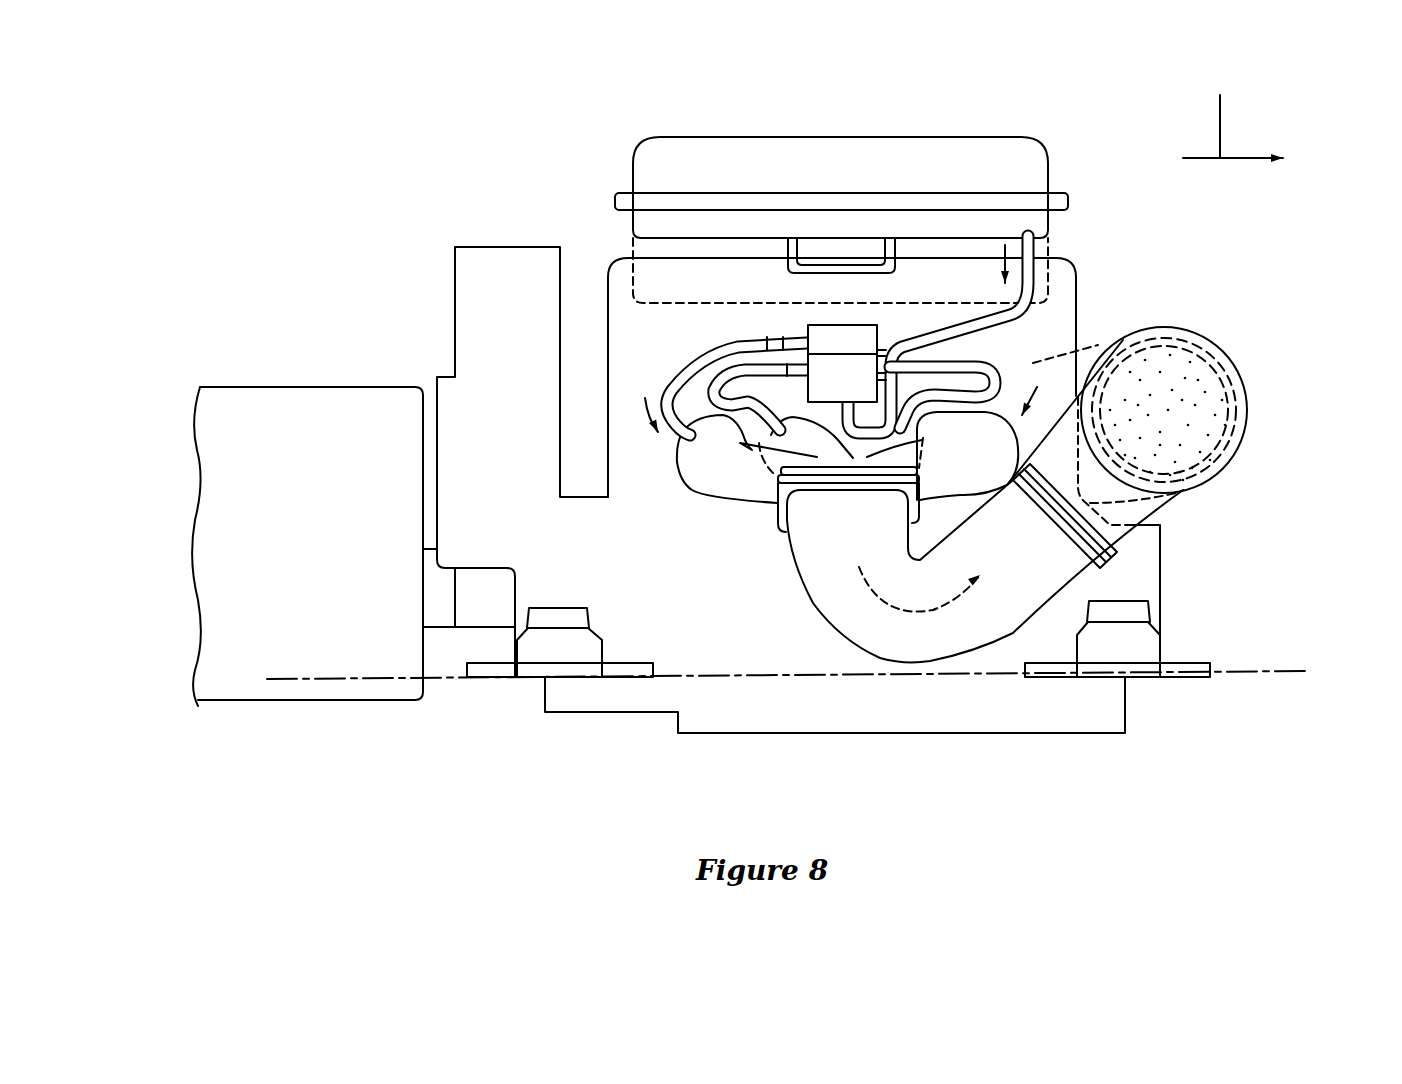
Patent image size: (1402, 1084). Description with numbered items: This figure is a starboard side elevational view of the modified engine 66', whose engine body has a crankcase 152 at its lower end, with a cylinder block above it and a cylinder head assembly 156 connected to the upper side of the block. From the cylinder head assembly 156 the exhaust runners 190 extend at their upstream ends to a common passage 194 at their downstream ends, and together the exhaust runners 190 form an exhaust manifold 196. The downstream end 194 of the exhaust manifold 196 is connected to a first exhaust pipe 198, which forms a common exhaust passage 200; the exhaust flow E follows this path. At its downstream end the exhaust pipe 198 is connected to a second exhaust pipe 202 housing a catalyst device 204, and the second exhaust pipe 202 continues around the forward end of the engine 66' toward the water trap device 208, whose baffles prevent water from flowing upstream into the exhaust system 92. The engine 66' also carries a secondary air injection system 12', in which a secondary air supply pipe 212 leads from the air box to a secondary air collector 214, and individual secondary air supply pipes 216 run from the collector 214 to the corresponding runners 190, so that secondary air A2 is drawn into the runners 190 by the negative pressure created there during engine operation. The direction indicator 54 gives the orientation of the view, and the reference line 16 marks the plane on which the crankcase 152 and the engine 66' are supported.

The forward direction indicator 54 is at (1233, 116).
The engine 66' is at (452, 402).
The water trap device 208 is at (287, 417).
The secondary air injection system 12' is at (788, 257).
The cylinder head assembly 156 is at (1081, 292).
The air flow A2 is at (648, 410).
The exhaust manifold 196 is at (683, 480).
The exhaust runners 190 is at (800, 437).
The common passage 194 is at (784, 530).
The first exhaust pipe 198 is at (992, 622).
The common exhaust passage 200 is at (1023, 587).
The exhaust gas flow E is at (929, 612).
The exhaust system 92 is at (1243, 312).
The second exhaust pipe 202 is at (1255, 386).
The catalyst device 204 is at (1197, 442).
The individual secondary air supply pipes 216 is at (767, 363).
The secondary air supply pipe 212 is at (935, 343).
The secondary air collector 214 is at (850, 333).
The support plane 16 is at (1262, 670).
The crankcase 152 is at (755, 707).